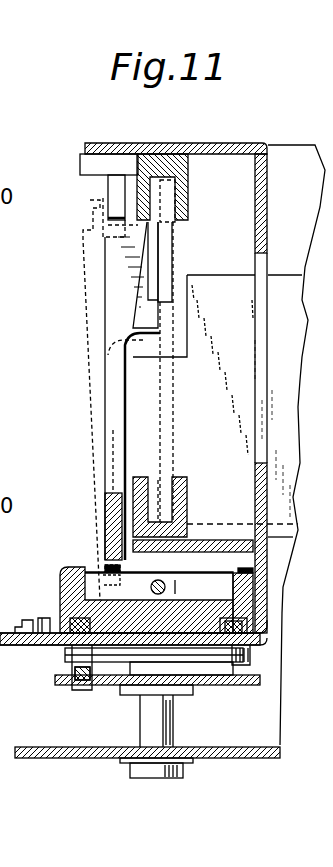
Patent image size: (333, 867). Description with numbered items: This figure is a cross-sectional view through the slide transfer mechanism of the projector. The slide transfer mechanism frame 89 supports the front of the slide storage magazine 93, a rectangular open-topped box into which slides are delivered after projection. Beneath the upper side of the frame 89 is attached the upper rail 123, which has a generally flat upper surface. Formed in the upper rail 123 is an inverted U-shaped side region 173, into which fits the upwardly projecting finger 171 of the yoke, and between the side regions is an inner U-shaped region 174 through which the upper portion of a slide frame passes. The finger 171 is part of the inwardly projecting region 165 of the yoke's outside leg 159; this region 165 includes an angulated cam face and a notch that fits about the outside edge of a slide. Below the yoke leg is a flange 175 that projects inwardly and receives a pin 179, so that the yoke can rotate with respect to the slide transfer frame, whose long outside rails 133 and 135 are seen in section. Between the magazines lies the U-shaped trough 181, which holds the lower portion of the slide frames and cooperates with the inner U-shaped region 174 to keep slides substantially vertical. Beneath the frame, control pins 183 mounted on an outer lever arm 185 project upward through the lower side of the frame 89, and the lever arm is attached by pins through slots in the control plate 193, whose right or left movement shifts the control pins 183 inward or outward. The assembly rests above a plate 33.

The base plate 33 is at (240, 758).
The slide transfer mechanism frame 89 is at (232, 148).
The slide storage magazine 93 is at (192, 275).
The upper rail 123 is at (165, 155).
The outside rail 133 is at (60, 596).
The outside rail 135 is at (253, 592).
The outside leg 159 is at (130, 454).
The inwardly projecting region 165 is at (108, 262).
The upwardly projecting finger 171 is at (132, 203).
The inverted U-shaped side region 173 is at (108, 185).
The inner U-shaped region 174 is at (163, 193).
The flange 175 is at (153, 568).
The pin 179 is at (173, 588).
The U-shaped trough 181 is at (187, 490).
The control pin 183 is at (72, 668).
The outer lever arm 185 is at (230, 687).
The control plate 193 is at (98, 685).